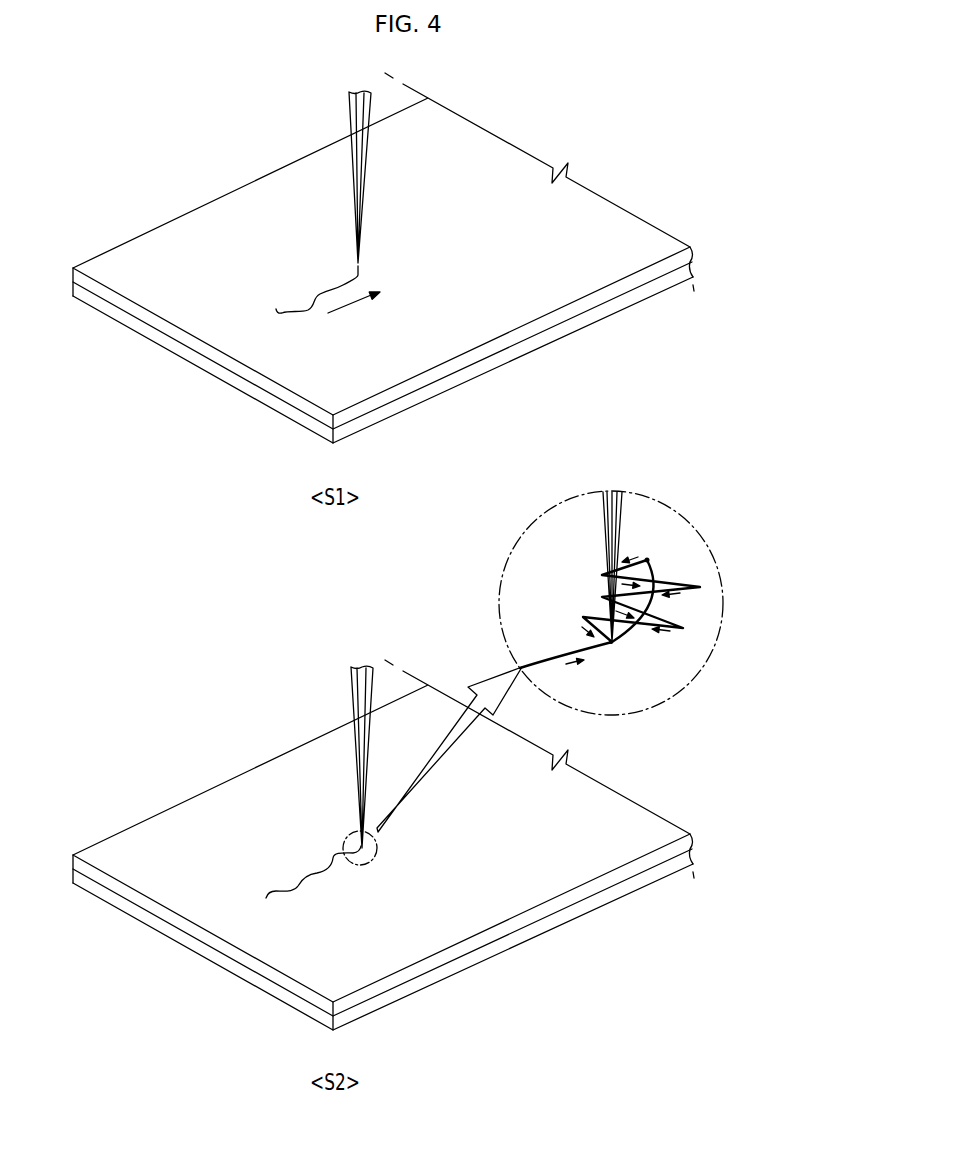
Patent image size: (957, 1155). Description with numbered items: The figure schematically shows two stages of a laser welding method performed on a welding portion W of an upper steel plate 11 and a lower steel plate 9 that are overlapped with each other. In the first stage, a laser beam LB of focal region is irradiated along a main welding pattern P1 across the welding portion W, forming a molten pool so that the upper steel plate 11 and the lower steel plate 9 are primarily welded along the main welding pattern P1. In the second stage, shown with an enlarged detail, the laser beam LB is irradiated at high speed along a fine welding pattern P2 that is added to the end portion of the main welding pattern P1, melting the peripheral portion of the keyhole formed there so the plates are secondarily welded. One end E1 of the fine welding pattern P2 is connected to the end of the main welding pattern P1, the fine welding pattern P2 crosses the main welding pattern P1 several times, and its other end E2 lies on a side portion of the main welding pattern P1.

The laser beam LB is at (352, 107).
The welding portion W is at (312, 276).
The main welding pattern P1 is at (277, 310).
The fine welding pattern P2 is at (374, 857).
The upper steel plate 11 is at (565, 292).
The lower steel plate 9 is at (533, 345).
The end of the fine welding pattern E1 is at (656, 551).
The other end of the fine welding pattern E2 is at (596, 643).